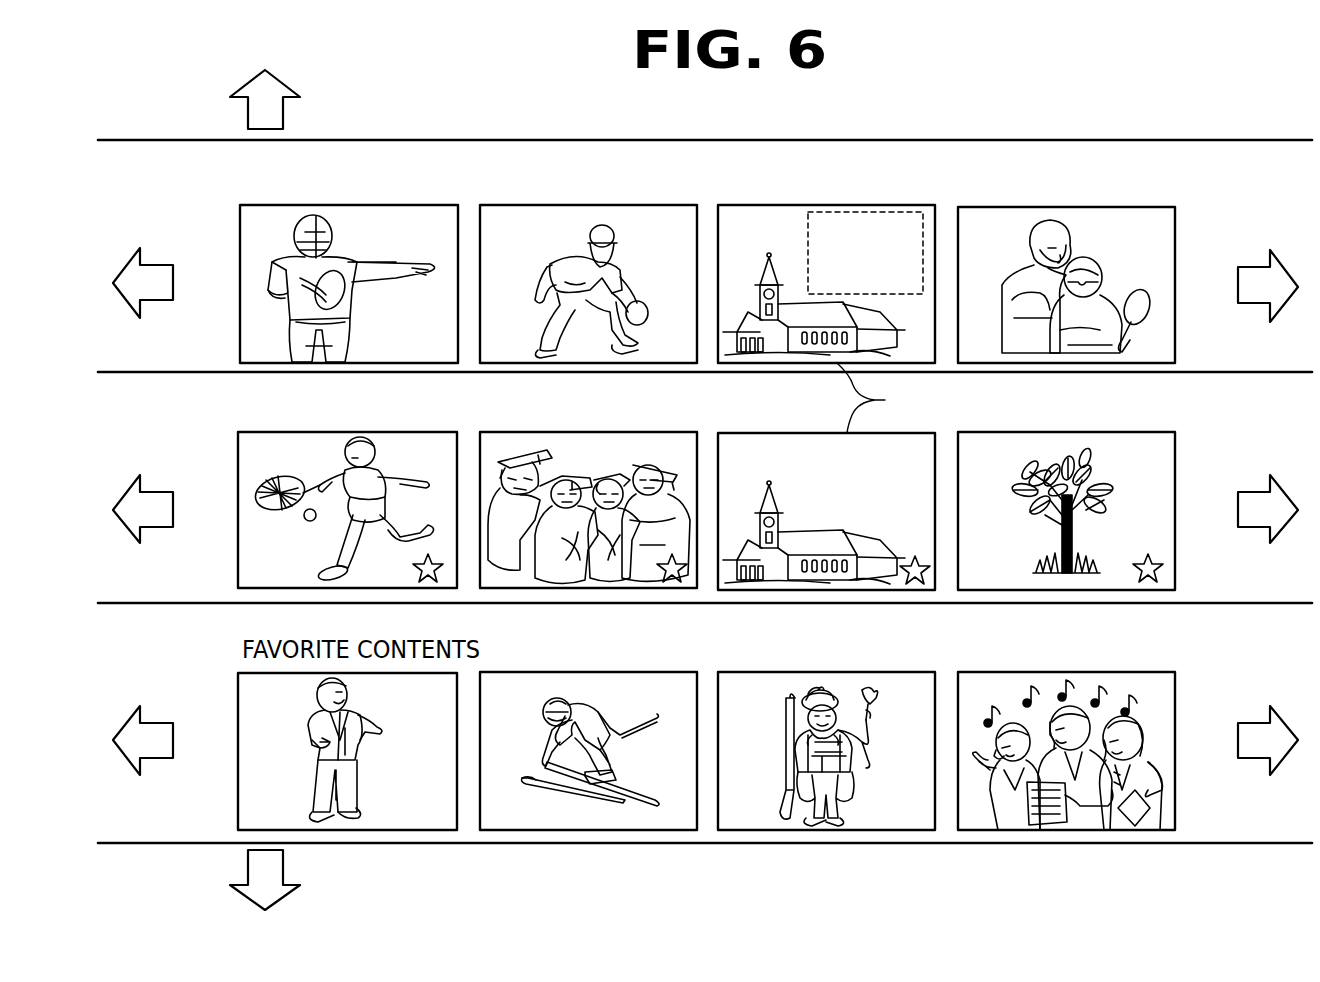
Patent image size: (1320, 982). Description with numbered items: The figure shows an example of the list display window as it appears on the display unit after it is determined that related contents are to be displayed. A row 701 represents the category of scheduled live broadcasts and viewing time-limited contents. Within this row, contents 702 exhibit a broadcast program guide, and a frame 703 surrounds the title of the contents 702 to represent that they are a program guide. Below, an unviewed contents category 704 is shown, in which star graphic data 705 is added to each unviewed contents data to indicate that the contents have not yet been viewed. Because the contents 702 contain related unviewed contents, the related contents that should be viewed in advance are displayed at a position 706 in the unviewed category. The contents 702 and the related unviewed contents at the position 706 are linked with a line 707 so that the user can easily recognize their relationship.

The row 701 is at (240, 352).
The contents 702 is at (857, 205).
The frame 703 is at (808, 233).
The unviewed contents category 704 is at (238, 576).
The star graphic data 705 is at (430, 583).
The position 706 is at (790, 433).
The line 707 is at (889, 398).